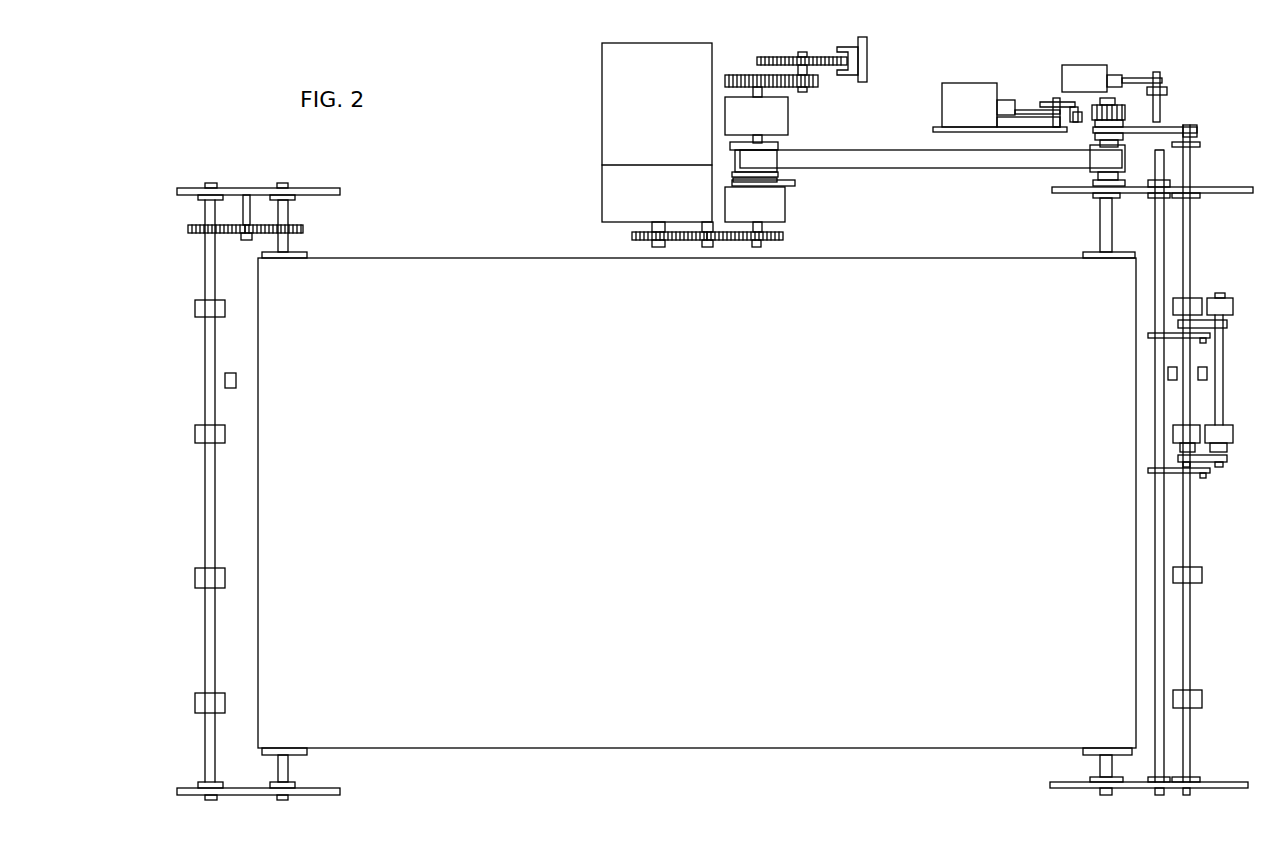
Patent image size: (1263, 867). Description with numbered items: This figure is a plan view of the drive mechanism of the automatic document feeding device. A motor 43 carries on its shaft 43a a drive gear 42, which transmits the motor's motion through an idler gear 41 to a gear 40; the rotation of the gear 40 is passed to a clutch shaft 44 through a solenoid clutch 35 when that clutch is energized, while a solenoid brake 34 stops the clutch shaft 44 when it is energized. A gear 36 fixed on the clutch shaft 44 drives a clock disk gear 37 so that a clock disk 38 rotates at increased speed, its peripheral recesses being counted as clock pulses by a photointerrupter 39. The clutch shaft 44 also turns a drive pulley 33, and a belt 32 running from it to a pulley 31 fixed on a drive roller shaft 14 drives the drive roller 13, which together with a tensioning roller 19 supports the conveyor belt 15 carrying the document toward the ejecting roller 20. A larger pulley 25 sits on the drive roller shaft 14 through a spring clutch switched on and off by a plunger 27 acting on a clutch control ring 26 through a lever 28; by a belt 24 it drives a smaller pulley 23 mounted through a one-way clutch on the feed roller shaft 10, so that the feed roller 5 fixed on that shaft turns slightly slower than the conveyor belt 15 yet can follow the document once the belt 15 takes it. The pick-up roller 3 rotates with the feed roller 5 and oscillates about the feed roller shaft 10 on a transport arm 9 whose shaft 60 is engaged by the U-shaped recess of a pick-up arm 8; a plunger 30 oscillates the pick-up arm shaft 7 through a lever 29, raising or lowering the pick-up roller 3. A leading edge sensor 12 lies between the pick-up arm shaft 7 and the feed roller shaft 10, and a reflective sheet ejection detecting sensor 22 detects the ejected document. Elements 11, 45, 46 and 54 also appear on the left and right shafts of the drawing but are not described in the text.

The pick-up roller 3 is at (1234, 305).
The feed roller 5 is at (1203, 574).
The pick-up arm shaft 7 is at (1154, 281).
The pick-up arm 8 is at (1165, 338).
The transport arm 9 is at (1228, 460).
The feed roller shaft 10 is at (1192, 640).
The rod 11 is at (1208, 375).
The leading edge sensor 12 is at (1167, 377).
The drive roller 13 is at (1127, 252).
The drive roller shaft 14 is at (1100, 213).
The conveyor belt 15 is at (917, 748).
The roller 19 is at (290, 757).
The ejecting roller 20 is at (196, 305).
The reflective sheet ejection detecting sensor 22 is at (230, 373).
The smaller pulley 23 is at (1198, 130).
The belt 24 is at (1174, 128).
The larger pulley 25 is at (1120, 140).
The clutch control ring 26 is at (1120, 106).
The plunger 27 is at (962, 88).
The lever 28 is at (1055, 99).
The lever 29 is at (1160, 72).
The plunger 30 is at (1083, 70).
The pulley 31 is at (1090, 173).
The belt 32 is at (912, 168).
The drive pulley 33 is at (779, 147).
The solenoid brake 34 is at (789, 116).
The solenoid clutch 35 is at (787, 208).
The gear 36 is at (740, 75).
The clock disk gear 37 is at (820, 86).
The clock disk 38 is at (822, 57).
The photointerrupter 39 is at (863, 66).
The gear 40 is at (784, 237).
The idler gear 41 is at (707, 247).
The drive gear 42 is at (632, 236).
The motor 43 is at (603, 75).
The shaft 43a is at (657, 247).
The clutch shaft 44 is at (757, 247).
The pin 45 is at (245, 240).
The gear 46 is at (190, 227).
The gear 54 is at (304, 228).
The shaft 60 is at (1204, 479).